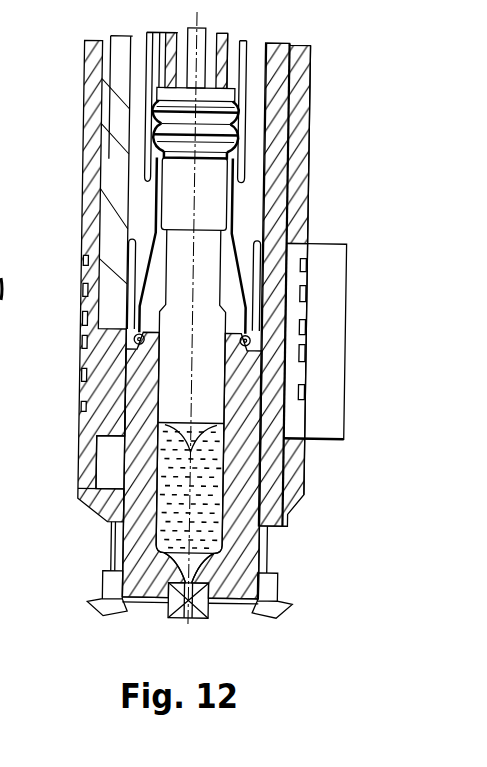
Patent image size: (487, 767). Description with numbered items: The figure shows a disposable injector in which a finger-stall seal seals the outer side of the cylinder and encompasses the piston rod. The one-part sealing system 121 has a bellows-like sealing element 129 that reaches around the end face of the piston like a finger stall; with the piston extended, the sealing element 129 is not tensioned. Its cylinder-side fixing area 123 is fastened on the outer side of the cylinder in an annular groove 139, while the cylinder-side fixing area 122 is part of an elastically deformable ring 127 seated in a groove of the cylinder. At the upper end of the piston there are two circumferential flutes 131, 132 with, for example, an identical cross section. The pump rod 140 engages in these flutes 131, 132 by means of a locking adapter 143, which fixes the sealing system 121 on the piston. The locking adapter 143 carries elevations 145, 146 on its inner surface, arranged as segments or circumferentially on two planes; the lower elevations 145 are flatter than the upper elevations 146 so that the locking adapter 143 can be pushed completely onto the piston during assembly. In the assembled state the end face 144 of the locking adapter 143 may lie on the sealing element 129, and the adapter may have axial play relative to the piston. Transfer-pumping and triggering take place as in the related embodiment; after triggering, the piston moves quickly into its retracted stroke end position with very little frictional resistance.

The pump rod 140 is at (190, 66).
The locking adapter 143 is at (240, 102).
The circumferential flute 131 is at (240, 123).
The end face of the locking adapter 144 is at (158, 128).
The lower elevations 145 is at (247, 133).
The circumferential flute 132 is at (247, 152).
The upper elevations 146 is at (252, 165).
The cylinder-side fixing area 123 is at (160, 142).
The sealing system 121 is at (138, 214).
The sealing element 129 is at (236, 247).
The cylinder-side fixing area 122 is at (255, 341).
The elastically deformable ring 127 is at (262, 349).
The annular groove 139 is at (272, 418).